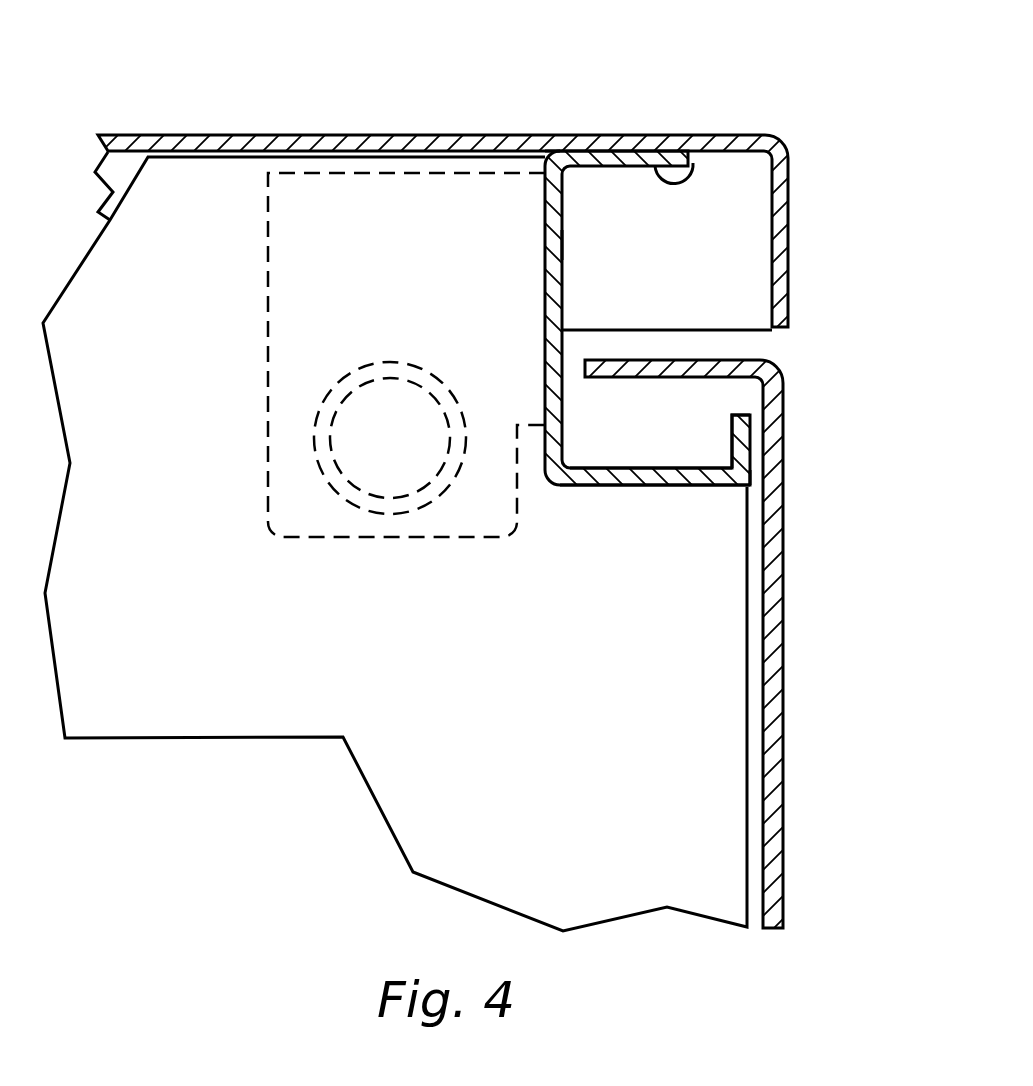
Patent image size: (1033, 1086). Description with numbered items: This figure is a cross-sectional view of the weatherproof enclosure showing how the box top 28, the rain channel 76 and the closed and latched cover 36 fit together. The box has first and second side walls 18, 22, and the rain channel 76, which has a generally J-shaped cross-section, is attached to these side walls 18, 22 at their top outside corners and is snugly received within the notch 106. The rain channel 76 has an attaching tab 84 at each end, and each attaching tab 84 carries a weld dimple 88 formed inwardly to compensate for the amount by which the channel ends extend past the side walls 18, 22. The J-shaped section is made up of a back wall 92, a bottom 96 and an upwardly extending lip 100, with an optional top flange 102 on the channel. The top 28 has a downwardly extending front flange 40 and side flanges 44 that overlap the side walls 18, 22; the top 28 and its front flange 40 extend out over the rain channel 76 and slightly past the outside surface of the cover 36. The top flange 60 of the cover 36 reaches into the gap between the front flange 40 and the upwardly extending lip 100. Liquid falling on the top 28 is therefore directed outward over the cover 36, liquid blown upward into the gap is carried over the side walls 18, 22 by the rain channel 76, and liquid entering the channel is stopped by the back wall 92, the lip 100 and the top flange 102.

The first side wall 18 is at (620, 756).
The second side wall 22 is at (395, 541).
The top 28 is at (471, 130).
The cover 36 is at (784, 580).
The front flange 40 is at (789, 247).
The side flange 44 is at (130, 160).
The top flange 60 is at (664, 360).
The rain channel 76 is at (606, 498).
The attaching tab 84 is at (367, 173).
The weld dimple 88 is at (370, 443).
The back wall 92 is at (565, 240).
The bottom 96 is at (678, 480).
The upwardly extending lip 100 is at (750, 433).
The top flange 102 is at (693, 163).
The notch 106 is at (553, 134).